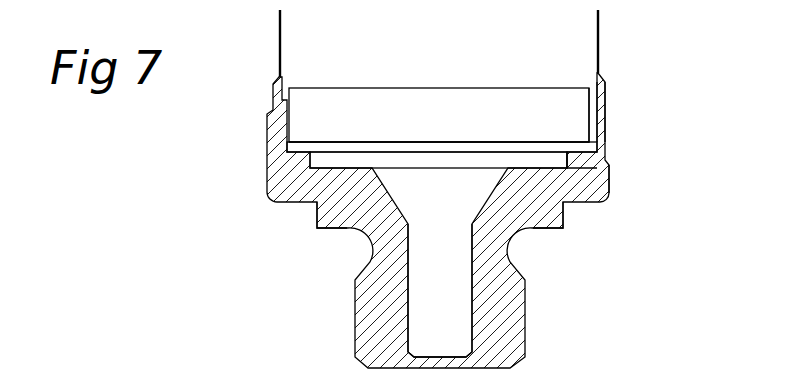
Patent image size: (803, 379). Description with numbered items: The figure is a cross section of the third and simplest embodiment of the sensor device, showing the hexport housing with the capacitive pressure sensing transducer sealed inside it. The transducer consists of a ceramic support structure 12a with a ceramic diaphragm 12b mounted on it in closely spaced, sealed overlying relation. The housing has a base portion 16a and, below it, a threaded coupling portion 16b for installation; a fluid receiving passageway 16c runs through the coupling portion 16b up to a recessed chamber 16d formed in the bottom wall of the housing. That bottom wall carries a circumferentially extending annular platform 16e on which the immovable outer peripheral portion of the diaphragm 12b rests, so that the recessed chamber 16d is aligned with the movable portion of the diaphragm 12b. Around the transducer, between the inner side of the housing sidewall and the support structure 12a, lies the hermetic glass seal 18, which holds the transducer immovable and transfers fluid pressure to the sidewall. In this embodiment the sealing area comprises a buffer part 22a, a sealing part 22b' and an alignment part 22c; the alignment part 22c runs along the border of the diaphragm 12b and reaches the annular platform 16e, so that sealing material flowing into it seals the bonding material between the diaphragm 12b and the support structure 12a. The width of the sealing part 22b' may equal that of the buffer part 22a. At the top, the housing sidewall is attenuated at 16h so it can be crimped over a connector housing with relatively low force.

The ceramic base or support structure 12a is at (393, 110).
The diaphragm 12b is at (447, 150).
The attenuated wall portion 16h is at (598, 40).
The buffer part 22a is at (603, 95).
The sealing part 22b' is at (662, 118).
The hermetic seal 18 is at (610, 127).
The alignment part 22c is at (598, 151).
The annular platform 16e is at (578, 153).
The base portion 16a is at (609, 177).
The recessed chamber 16d is at (547, 162).
The fluid receiving passageway 16c is at (455, 275).
The threaded coupling portion 16b is at (525, 325).